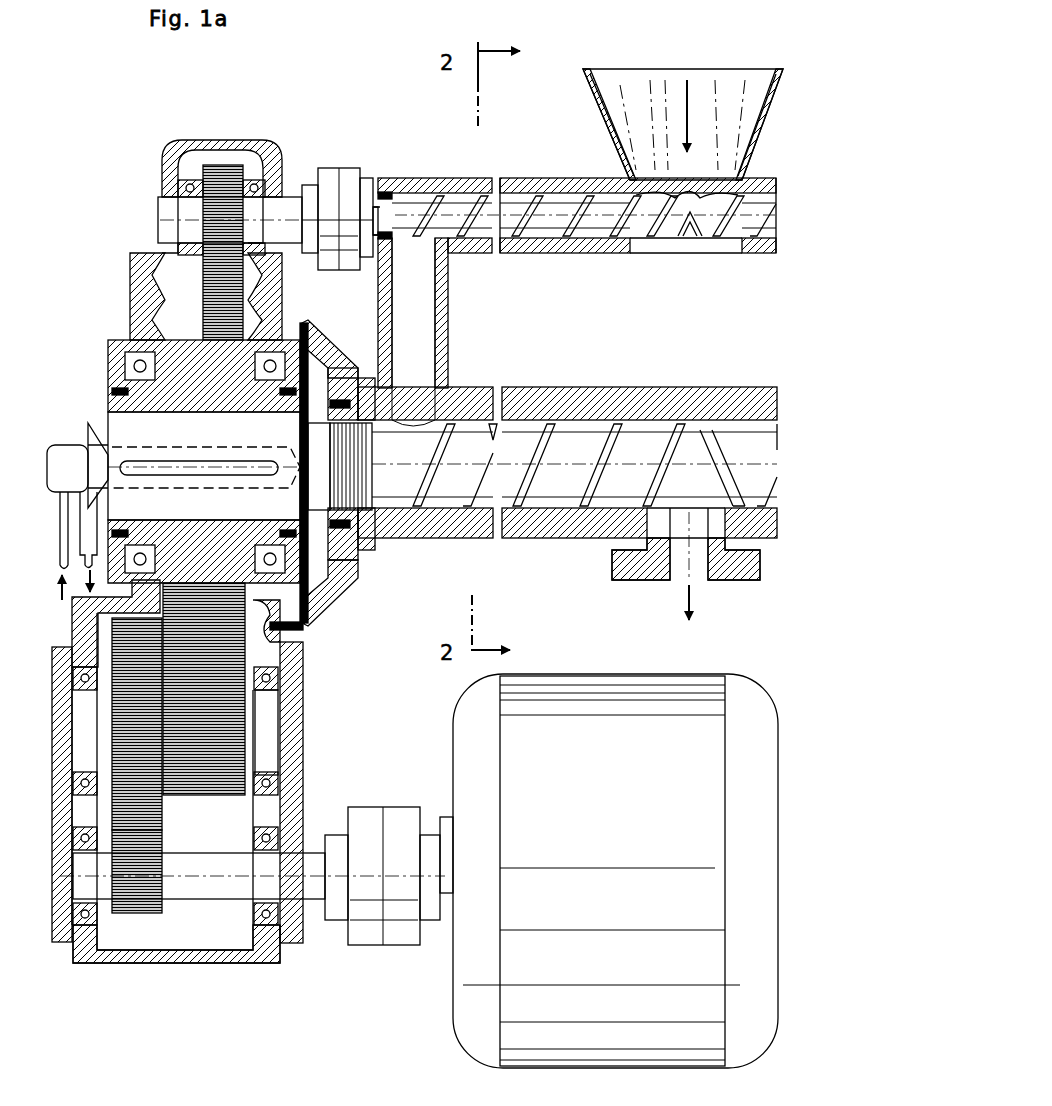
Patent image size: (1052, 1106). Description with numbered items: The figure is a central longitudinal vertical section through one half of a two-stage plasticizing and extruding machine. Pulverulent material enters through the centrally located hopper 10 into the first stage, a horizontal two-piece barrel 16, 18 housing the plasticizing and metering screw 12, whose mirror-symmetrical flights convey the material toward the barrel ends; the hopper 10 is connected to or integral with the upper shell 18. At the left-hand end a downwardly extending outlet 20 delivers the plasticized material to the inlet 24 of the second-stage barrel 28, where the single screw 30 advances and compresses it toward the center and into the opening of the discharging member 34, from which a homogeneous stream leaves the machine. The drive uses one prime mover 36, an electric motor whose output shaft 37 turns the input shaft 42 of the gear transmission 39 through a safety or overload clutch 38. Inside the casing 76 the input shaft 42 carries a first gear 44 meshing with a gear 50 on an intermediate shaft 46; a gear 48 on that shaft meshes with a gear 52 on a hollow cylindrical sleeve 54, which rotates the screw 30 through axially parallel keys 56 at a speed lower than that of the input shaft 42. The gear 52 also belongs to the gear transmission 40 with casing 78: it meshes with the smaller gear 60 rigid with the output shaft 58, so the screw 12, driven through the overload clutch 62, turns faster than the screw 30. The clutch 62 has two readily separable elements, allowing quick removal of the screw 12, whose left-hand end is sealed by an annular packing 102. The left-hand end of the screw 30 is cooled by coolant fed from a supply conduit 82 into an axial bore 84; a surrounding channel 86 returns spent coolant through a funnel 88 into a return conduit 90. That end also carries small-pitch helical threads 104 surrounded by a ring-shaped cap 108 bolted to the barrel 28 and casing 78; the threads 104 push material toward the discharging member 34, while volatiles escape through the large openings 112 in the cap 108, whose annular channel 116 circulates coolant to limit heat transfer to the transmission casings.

The hopper 10 is at (726, 82).
The plasticizing and metering screw 12 is at (545, 210).
The barrel section 16 is at (570, 253).
The barrel section 18 is at (512, 178).
The outlet 20 is at (443, 252).
The inlet 24 is at (418, 408).
The barrel 28 is at (680, 398).
The screw 30 is at (566, 436).
The discharging member 34 is at (700, 578).
The prime mover 36 is at (599, 740).
The output shaft 37 is at (446, 895).
The safety clutch 38 is at (403, 820).
The gear transmission 39 is at (318, 690).
The gear transmission 40 is at (126, 238).
The input shaft 42 is at (218, 885).
The first gear 44 is at (132, 910).
The intermediate shaft 46 is at (270, 712).
The gear 48 is at (222, 760).
The gear 50 is at (148, 812).
The gear 52 is at (308, 632).
The hollow cylindrical sleeve 54 is at (112, 352).
The key 56 is at (152, 398).
The output shaft 58 is at (162, 210).
The gear 60 is at (220, 165).
The overload clutch 62 is at (340, 180).
The casing 76 is at (298, 778).
The casing 78 is at (140, 300).
The supply conduit 82 is at (62, 530).
The axial bore 84 is at (152, 462).
The channel 86 is at (200, 442).
The funnel 88 is at (92, 462).
The return conduit 90 is at (83, 548).
The annular packing 102 is at (384, 192).
The helical threads 104 is at (360, 505).
The cap 108 is at (360, 548).
The openings 112 is at (338, 326).
The channel 116 is at (345, 570).